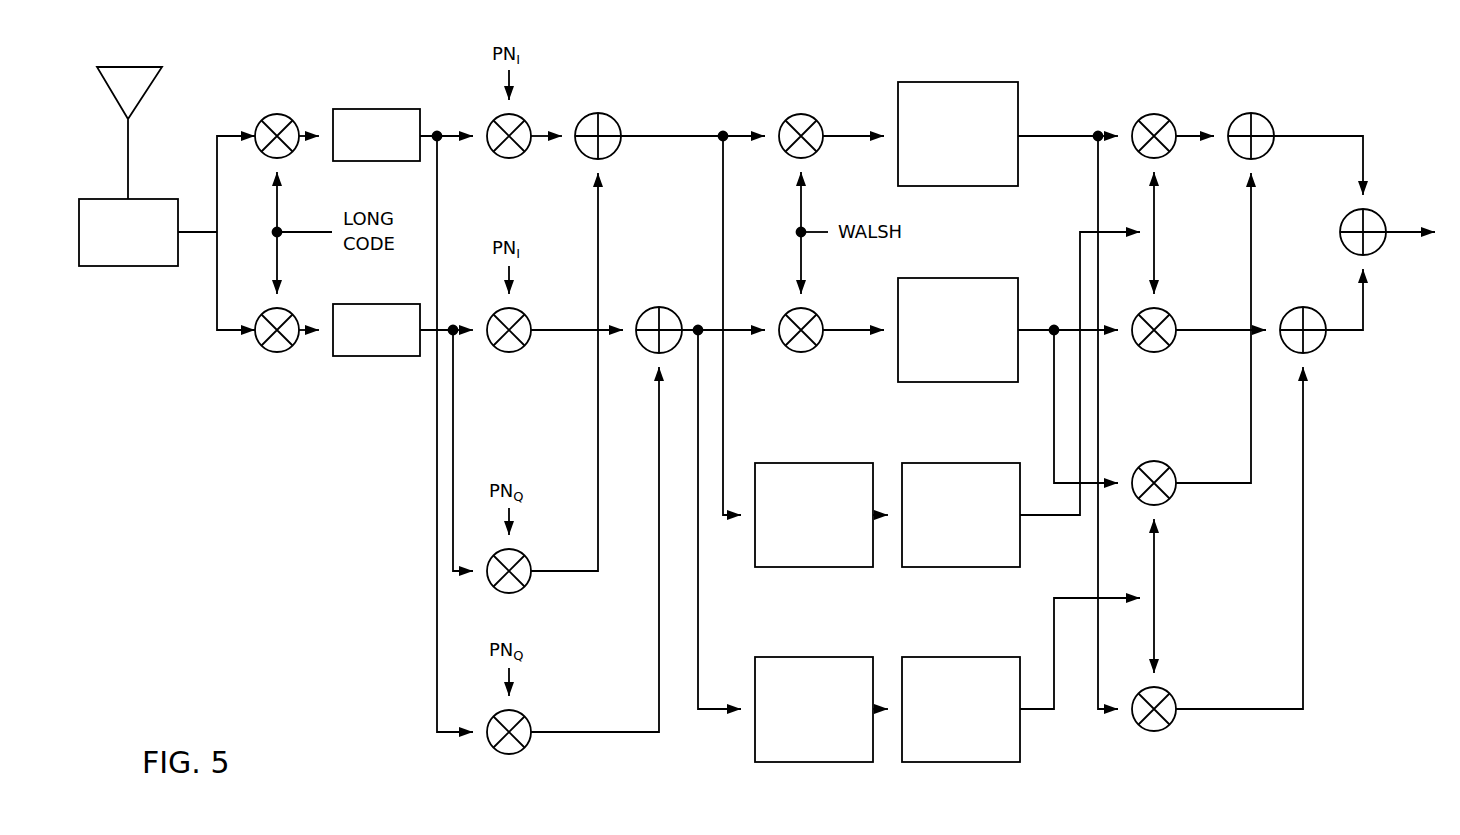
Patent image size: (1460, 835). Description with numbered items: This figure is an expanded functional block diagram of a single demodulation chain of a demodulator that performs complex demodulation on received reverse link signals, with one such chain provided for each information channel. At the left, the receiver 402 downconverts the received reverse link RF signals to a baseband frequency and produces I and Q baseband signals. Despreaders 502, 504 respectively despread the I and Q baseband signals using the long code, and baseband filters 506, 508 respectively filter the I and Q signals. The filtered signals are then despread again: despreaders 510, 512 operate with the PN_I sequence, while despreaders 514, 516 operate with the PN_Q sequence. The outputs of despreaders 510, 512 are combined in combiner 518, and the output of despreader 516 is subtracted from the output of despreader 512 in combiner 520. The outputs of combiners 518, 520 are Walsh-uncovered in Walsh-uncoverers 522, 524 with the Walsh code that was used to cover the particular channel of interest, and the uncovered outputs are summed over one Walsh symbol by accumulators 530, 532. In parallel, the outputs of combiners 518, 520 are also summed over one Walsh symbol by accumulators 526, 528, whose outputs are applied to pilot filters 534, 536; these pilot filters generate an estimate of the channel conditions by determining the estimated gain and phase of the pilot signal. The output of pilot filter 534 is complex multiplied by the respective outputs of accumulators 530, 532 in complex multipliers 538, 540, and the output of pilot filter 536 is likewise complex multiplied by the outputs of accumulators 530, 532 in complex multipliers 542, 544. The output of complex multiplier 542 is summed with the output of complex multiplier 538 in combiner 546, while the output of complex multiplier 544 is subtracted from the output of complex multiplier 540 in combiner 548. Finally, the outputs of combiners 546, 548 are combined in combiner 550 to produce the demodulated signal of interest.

The receiver 402 is at (113, 266).
The despreader 502 is at (268, 114).
The despreader 504 is at (268, 350).
The baseband filter 506 is at (362, 109).
The baseband filter 508 is at (362, 356).
The despreader 510 is at (527, 116).
The despreader 512 is at (515, 352).
The despreader 514 is at (527, 590).
The despreader 516 is at (515, 754).
The combiner 518 is at (612, 153).
The combiner 520 is at (667, 310).
The Walsh-uncoverer 522 is at (792, 114).
The Walsh-uncoverer 524 is at (792, 352).
The accumulator 526 is at (814, 463).
The accumulator 528 is at (814, 657).
The accumulator 530 is at (960, 82).
The accumulator 532 is at (960, 278).
The pilot filter 534 is at (962, 463).
The pilot filter 536 is at (962, 657).
The complex multiplier 538 is at (1147, 113).
The complex multiplier 540 is at (1160, 352).
The complex multiplier 542 is at (1172, 500).
The complex multiplier 544 is at (1172, 692).
The combiner 546 is at (1257, 112).
The combiner 548 is at (1322, 348).
The combiner 550 is at (1347, 212).